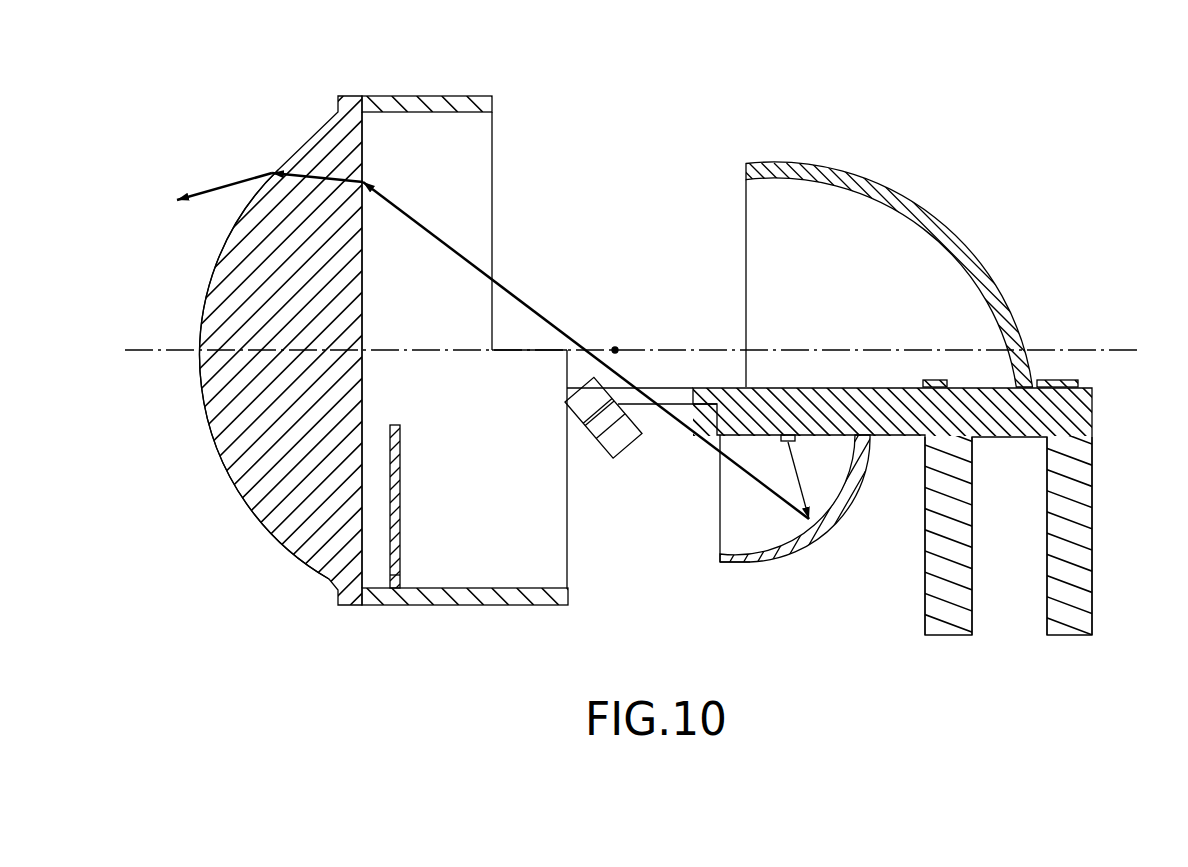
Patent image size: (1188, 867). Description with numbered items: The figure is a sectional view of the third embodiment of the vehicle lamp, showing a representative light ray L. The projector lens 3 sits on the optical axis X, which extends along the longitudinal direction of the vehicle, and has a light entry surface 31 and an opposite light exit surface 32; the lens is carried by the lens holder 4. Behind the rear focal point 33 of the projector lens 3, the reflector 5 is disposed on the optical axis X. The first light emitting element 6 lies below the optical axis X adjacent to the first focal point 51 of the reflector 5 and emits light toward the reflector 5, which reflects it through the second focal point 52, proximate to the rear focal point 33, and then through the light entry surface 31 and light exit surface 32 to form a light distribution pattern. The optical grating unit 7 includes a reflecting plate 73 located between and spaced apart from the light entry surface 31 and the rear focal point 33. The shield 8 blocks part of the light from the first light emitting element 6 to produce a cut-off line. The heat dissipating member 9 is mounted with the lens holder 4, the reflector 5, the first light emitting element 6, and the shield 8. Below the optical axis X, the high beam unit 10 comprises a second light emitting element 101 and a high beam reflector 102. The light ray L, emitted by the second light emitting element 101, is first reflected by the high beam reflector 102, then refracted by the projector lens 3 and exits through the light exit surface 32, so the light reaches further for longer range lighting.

The projector lens 3 is at (319, 113).
The light entry surface 31 is at (365, 137).
The light exit surface 32 is at (259, 516).
The rear focal point 33 is at (615, 347).
The lens holder 4 is at (457, 86).
The reflector 5 is at (873, 183).
The first focal point 51 is at (945, 390).
The second focal point 52 is at (583, 347).
The first light emitting element 6 is at (953, 381).
The optical grating unit 7 is at (403, 558).
The reflecting plate 73 is at (390, 573).
The shield 8 is at (600, 450).
The heat dissipating member 9 is at (1096, 577).
The high beam unit 10 is at (805, 562).
The second light emitting element 101 is at (796, 437).
The high beam reflector 102 is at (732, 565).
The light ray L is at (198, 193).
The optical axis X is at (646, 352).